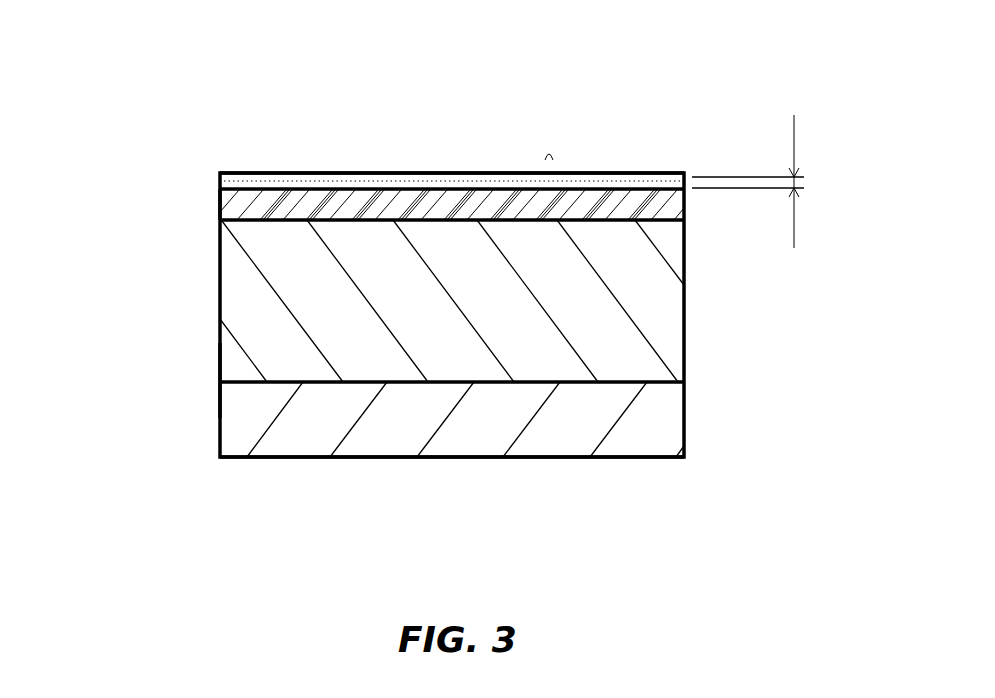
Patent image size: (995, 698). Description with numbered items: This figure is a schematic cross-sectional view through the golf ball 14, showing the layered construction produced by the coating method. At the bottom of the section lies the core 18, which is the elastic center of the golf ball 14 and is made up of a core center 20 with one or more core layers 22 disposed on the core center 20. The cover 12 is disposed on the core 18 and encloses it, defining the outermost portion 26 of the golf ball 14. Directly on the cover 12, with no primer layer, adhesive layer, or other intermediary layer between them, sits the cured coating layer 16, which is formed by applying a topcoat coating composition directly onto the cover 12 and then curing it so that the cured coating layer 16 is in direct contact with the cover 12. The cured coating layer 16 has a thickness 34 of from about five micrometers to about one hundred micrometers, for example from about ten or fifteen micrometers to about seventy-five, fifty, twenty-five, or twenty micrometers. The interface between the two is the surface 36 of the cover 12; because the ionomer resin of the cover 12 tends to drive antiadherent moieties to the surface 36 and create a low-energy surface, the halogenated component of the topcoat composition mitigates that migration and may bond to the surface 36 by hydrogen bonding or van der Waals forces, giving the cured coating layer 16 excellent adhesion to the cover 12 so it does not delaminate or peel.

The golf ball 14 is at (122, 104).
The cured coating layer 16 is at (281, 173).
The cover 12 is at (220, 202).
The core layers 22 is at (686, 307).
The core center 20 is at (686, 414).
The core 18 is at (220, 418).
The outermost portion 26 is at (164, 194).
The thickness 34 is at (778, 181).
The surface 36 is at (560, 183).